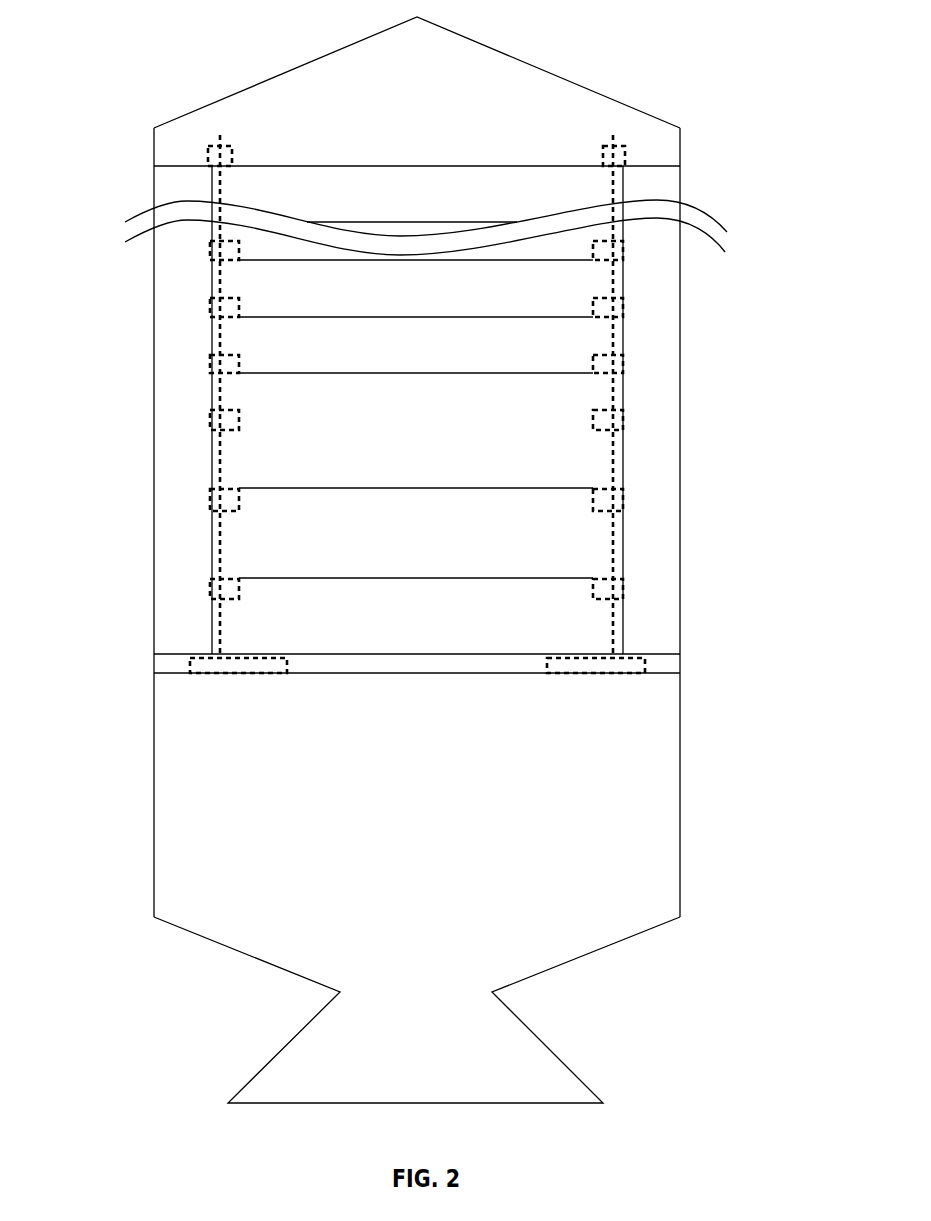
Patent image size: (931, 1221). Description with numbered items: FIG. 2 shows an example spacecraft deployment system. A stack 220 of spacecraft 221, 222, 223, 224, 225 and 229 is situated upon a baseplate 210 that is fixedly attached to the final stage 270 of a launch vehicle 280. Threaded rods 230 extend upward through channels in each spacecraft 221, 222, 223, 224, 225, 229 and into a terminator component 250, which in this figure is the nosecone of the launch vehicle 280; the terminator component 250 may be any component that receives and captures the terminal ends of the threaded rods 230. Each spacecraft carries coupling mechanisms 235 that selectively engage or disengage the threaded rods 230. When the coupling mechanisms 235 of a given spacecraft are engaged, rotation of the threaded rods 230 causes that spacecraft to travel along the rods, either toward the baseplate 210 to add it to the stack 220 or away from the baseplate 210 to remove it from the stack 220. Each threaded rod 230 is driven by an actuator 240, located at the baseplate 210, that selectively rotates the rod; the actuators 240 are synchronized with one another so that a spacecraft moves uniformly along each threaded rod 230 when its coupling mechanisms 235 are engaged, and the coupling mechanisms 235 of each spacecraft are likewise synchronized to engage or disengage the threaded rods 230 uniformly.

The launch vehicle 280 is at (718, 128).
The terminator component 250 is at (514, 87).
The final stage 270 is at (465, 785).
The baseplate 210 is at (653, 666).
The spacecraft 229 is at (622, 195).
The spacecraft 225 is at (624, 288).
The spacecraft 224 is at (624, 345).
The spacecraft 223 is at (627, 445).
The spacecraft 222 is at (626, 530).
The spacecraft 221 is at (626, 615).
The stack 220 is at (392, 622).
The threaded rods 230 is at (218, 133).
The coupling mechanisms 235 is at (209, 585).
The actuator 240 is at (583, 673).